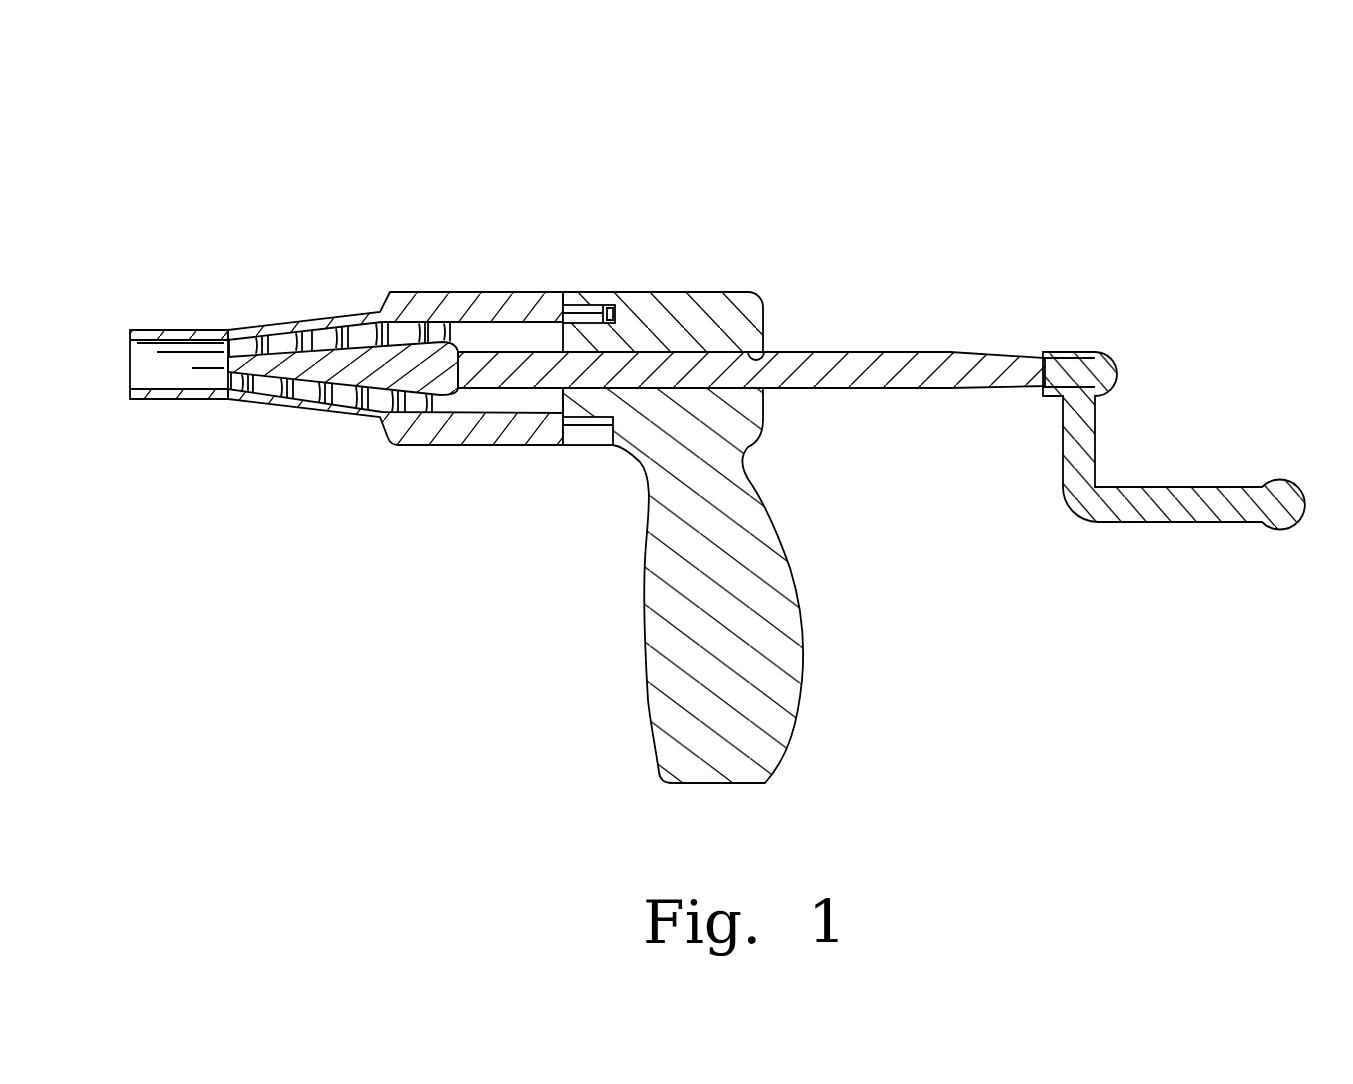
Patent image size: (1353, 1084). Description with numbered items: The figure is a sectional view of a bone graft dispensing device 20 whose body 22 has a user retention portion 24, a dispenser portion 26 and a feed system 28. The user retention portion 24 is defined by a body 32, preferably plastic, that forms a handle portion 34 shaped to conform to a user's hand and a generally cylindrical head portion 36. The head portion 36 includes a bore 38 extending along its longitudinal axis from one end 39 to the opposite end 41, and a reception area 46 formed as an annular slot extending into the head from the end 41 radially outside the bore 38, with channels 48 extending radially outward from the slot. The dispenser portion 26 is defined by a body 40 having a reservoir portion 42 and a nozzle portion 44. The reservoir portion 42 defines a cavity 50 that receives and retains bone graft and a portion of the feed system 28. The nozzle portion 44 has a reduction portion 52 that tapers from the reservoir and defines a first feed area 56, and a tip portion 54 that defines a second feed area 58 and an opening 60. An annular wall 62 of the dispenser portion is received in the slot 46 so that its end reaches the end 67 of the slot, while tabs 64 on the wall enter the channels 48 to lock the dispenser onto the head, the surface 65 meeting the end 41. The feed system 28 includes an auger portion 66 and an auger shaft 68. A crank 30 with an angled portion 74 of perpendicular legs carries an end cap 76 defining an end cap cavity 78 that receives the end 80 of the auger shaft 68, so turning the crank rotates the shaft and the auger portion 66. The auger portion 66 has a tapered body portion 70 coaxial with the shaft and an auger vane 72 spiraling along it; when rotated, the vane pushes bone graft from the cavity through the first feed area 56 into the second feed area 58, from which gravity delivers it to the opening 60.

The bone graft dispensing device 20 is at (926, 162).
The body 22 is at (490, 520).
The user retention portion 24 is at (843, 626).
The dispenser portion 26 is at (430, 246).
The feed system 28 is at (670, 326).
The crank 30 is at (1180, 414).
The body 32 is at (630, 594).
The handle portion 34 is at (779, 712).
The head portion 36 is at (656, 293).
The bore 38 is at (766, 336).
The end 39 is at (768, 418).
The body 40 is at (383, 288).
The end 41 is at (548, 402).
The reservoir portion 42 is at (470, 293).
The nozzle portion 44 is at (230, 404).
The reception area 46 is at (609, 442).
The channels 48 is at (614, 305).
The cavity 50 is at (470, 405).
The reduction portion 52 is at (283, 402).
The tip portion 54 is at (186, 330).
The first feed area 56 is at (356, 330).
The second feed area 58 is at (186, 389).
The opening 60 is at (155, 365).
The wall 62 is at (578, 430).
The tabs 64 is at (576, 304).
The surface 65 is at (600, 318).
The auger portion 66 is at (448, 326).
The end 67 is at (634, 462).
The auger shaft 68 is at (905, 359).
The body portion 70 is at (352, 376).
The auger vane 72 is at (318, 320).
The angled portion 74 is at (1158, 512).
The end cap 76 is at (1120, 368).
The end cap cavity 78 is at (1043, 352).
The end 80 is at (1096, 350).